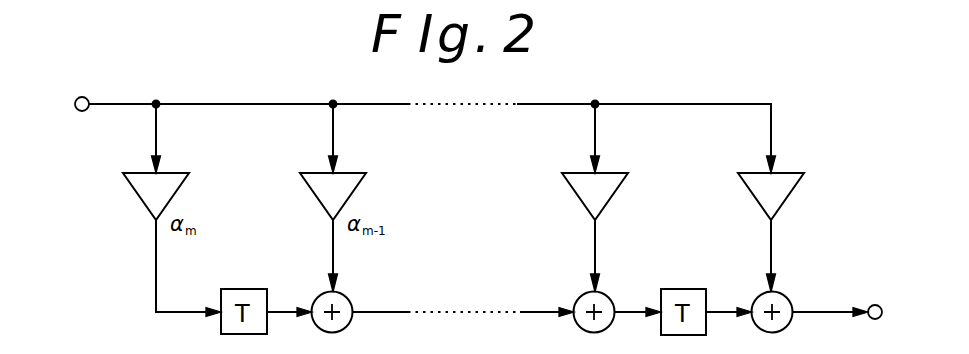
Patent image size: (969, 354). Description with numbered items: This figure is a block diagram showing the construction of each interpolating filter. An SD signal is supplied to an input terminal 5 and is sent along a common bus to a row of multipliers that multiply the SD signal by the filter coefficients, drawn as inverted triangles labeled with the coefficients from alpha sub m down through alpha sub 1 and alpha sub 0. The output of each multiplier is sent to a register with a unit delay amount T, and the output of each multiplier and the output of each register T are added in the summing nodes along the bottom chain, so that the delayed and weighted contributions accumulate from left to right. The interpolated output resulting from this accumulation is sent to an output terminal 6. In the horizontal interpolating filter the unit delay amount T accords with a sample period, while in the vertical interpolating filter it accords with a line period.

The input terminal 5 is at (84, 111).
The output terminal 6 is at (873, 305).
The multiplier with coefficient alpha 1 is at (597, 205).
The multiplier with coefficient alpha 0 is at (773, 205).